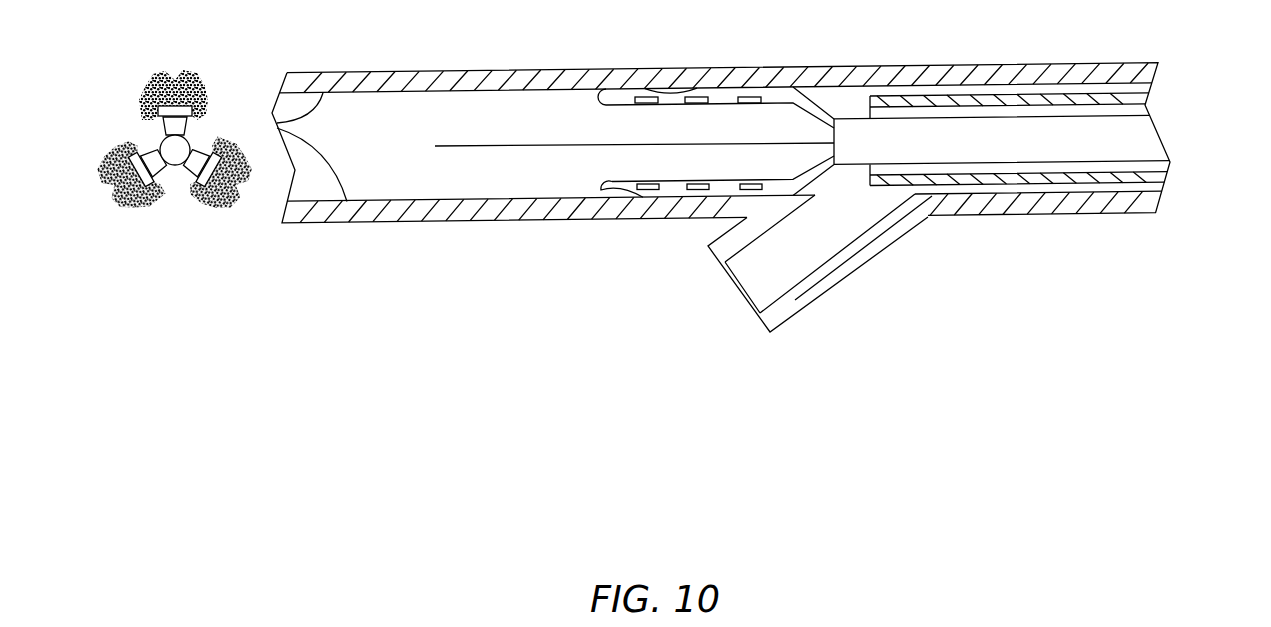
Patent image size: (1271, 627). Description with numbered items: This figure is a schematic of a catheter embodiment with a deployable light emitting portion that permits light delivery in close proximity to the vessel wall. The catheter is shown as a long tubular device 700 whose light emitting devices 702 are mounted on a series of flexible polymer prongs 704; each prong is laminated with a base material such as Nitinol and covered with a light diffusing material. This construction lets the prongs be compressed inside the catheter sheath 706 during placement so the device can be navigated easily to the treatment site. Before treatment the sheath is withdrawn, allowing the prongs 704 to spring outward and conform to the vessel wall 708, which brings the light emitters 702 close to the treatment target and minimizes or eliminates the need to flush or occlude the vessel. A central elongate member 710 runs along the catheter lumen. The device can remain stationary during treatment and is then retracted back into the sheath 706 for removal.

The catheter assembly 700 is at (1170, 127).
The light emitting devices 702 is at (750, 95).
The flexible polymer prongs 704 is at (673, 188).
The catheter sheath 706 is at (937, 95).
The vessel wall 708 is at (277, 125).
The wire 710 is at (532, 145).